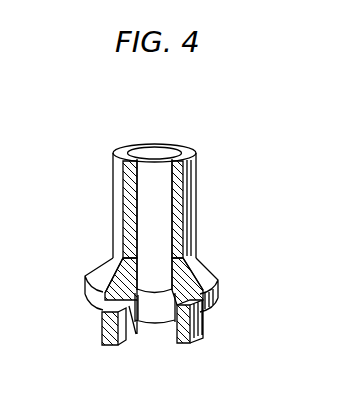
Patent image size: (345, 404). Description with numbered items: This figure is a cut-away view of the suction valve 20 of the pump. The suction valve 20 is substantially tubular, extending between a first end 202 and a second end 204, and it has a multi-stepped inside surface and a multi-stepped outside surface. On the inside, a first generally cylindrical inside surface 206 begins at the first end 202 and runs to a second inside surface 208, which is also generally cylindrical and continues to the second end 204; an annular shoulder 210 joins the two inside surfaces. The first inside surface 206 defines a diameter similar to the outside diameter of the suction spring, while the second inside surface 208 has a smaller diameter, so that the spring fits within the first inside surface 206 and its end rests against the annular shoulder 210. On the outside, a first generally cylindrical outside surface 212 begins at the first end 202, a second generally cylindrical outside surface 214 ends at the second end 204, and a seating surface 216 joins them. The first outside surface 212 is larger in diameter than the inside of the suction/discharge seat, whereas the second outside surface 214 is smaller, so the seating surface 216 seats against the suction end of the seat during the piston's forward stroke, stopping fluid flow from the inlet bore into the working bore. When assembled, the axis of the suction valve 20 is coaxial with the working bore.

The suction valve 20 is at (257, 206).
The first end 202 is at (168, 337).
The second end 204 is at (183, 152).
The first inside surface 206 is at (136, 340).
The second inside surface 208 is at (137, 181).
The annular shoulder 210 is at (140, 332).
The first outside surface 212 is at (205, 323).
The second outside surface 214 is at (187, 175).
The seating surface 216 is at (208, 272).